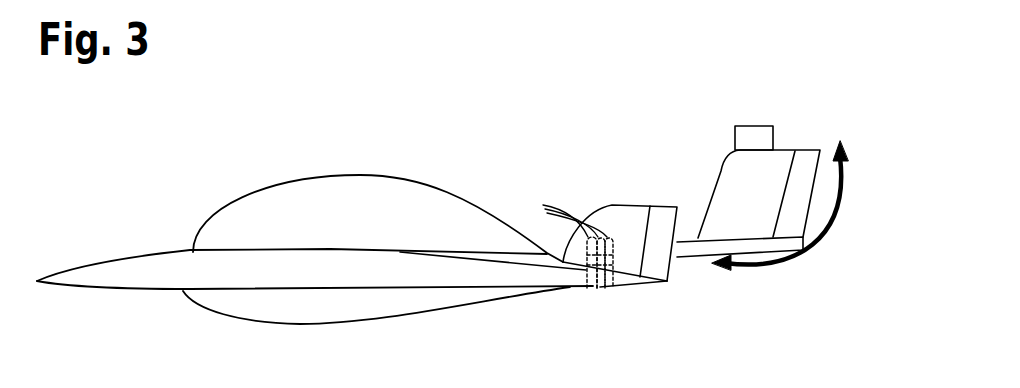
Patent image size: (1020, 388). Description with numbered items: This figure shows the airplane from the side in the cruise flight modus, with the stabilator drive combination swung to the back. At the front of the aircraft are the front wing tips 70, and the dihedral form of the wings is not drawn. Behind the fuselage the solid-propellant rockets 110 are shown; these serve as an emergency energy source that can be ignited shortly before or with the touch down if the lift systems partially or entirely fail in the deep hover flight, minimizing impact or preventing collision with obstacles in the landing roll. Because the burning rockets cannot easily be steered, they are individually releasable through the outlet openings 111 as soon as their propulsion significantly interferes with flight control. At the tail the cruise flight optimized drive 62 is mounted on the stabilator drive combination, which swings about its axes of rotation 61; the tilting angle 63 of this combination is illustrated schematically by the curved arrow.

The front wing tips 70 is at (38, 280).
The solid-propellant rockets 110 is at (590, 289).
The outlet openings 111 is at (548, 208).
The axes of rotation of the stabilator drive combination 61 is at (752, 173).
The cruise flight optimized drive 62 is at (817, 175).
The tilting angle of the stabilator drive combination 63 is at (800, 257).